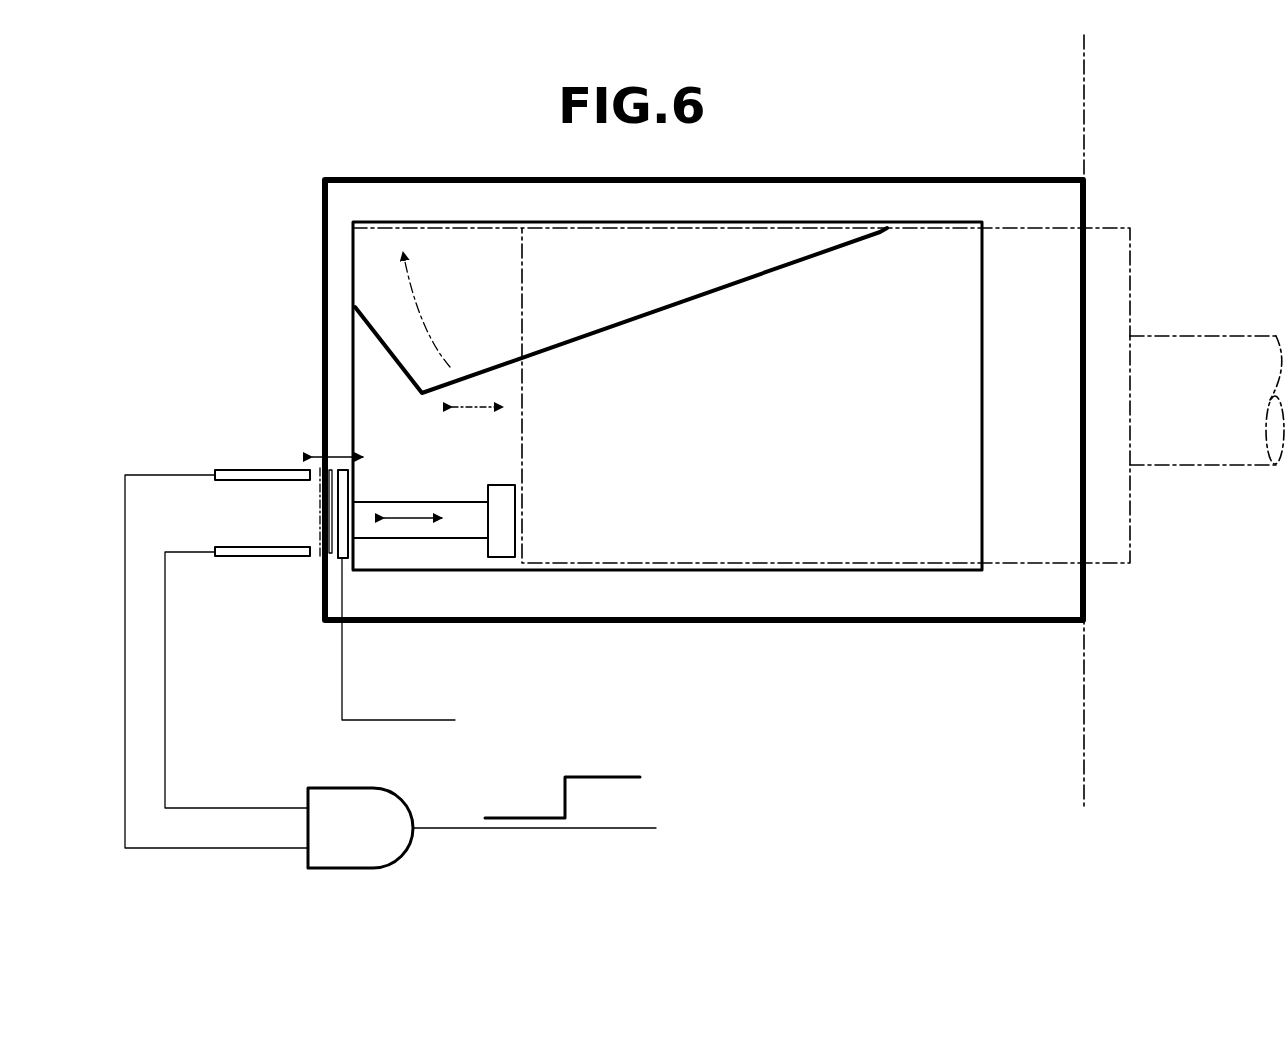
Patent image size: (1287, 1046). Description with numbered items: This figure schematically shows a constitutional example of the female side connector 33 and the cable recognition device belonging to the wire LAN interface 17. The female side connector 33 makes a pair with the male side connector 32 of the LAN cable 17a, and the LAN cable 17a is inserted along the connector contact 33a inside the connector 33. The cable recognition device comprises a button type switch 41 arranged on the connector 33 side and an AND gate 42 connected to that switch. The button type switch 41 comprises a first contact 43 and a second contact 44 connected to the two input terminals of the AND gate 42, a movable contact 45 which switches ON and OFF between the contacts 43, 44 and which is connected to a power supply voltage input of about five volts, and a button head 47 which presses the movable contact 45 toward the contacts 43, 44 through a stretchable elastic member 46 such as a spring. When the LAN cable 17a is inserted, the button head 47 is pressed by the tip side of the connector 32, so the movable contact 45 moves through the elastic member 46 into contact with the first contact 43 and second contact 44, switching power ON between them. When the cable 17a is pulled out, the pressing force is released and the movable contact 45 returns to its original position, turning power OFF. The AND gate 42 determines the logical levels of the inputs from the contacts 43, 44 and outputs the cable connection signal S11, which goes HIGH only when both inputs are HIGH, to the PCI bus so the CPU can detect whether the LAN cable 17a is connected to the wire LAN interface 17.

The wire LAN interface 17 is at (1085, 740).
The LAN cable 17a is at (1208, 345).
The male side connector 32 is at (1122, 568).
The female side connector 33 is at (893, 623).
The connector contact 33a is at (697, 300).
The button type switch 41 is at (260, 370).
The AND gate 42 is at (370, 786).
The first contact 43 is at (215, 470).
The second contact 44 is at (222, 557).
The movable contact 45 is at (350, 545).
The elastic member 46 is at (405, 500).
The button head 47 is at (503, 485).
The cable connection signal S11 is at (755, 810).